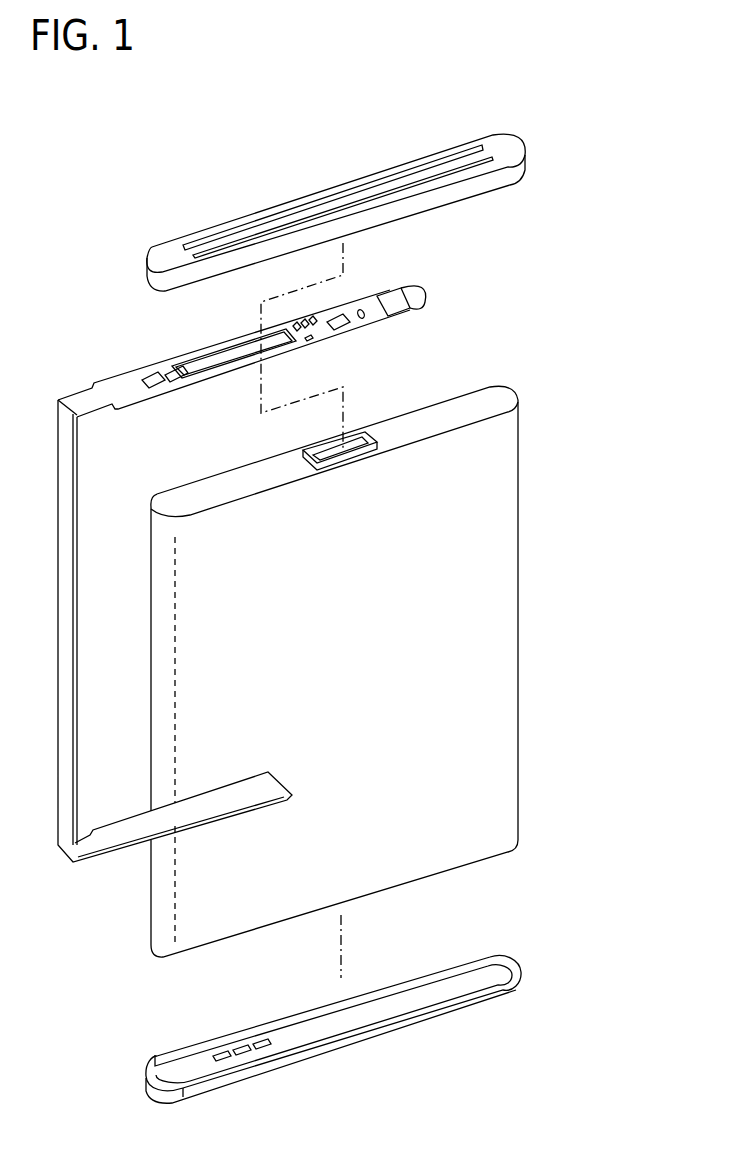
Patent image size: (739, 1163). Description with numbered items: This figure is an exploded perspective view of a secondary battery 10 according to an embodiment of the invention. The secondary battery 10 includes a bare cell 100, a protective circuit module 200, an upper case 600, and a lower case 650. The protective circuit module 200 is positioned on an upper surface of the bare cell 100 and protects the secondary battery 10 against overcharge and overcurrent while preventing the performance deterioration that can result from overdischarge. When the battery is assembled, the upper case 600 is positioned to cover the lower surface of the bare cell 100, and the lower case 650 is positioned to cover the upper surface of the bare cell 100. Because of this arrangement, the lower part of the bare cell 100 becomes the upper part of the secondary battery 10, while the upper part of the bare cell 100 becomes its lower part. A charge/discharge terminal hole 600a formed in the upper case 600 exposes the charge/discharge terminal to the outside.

The secondary battery 10 is at (73, 153).
The bare cell 100 is at (532, 480).
The protective circuit module 200 is at (107, 355).
The upper case 600 is at (353, 1053).
The charge/discharge terminal hole 600a is at (222, 1053).
The lower case 650 is at (275, 195).